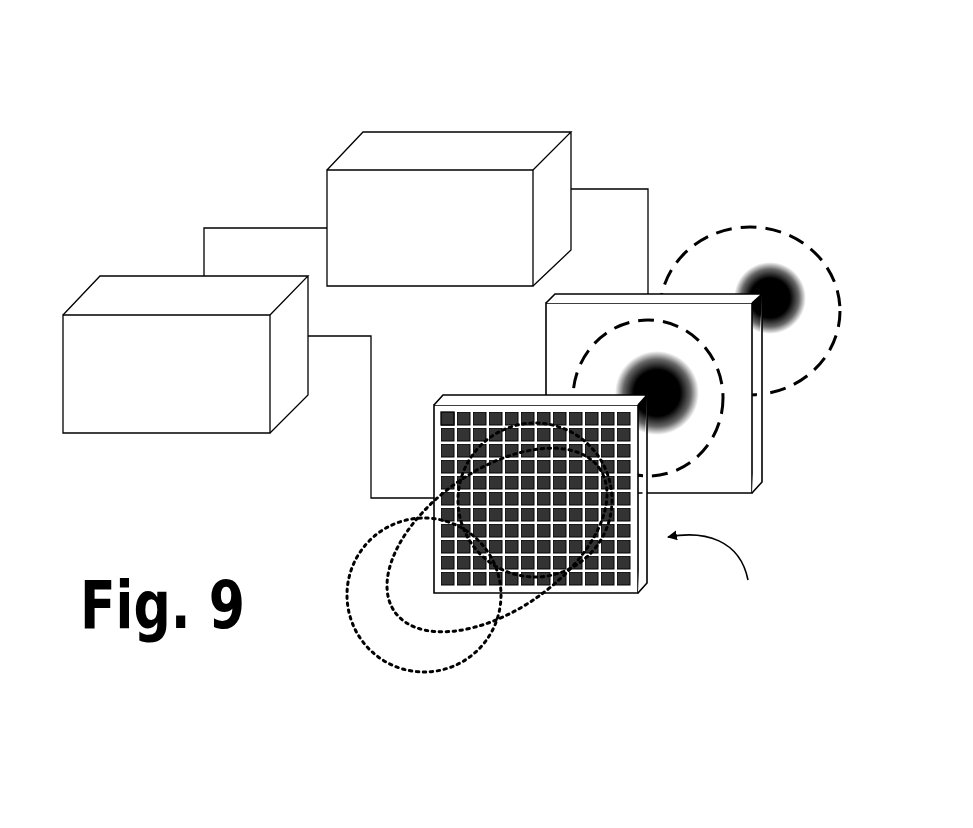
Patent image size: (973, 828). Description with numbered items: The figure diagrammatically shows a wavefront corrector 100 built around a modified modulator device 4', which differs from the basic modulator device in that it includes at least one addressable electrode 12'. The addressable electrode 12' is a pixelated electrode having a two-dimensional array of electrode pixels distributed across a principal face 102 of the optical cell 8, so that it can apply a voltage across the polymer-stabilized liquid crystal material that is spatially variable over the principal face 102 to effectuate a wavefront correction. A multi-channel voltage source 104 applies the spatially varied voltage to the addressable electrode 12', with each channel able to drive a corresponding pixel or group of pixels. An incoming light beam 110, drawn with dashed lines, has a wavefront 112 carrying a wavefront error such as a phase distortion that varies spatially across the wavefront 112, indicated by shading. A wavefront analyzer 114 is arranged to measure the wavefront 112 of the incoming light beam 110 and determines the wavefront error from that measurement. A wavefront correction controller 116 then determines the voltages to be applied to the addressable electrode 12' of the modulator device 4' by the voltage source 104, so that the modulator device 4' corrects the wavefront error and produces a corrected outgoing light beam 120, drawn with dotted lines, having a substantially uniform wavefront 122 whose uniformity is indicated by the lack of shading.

The wavefront corrector 100 is at (62, 113).
The multi-channel voltage source 104 is at (128, 293).
The wavefront correction controller 116 is at (453, 146).
The wavefront analyzer 114 is at (728, 296).
The wavefront 112 is at (800, 296).
The incoming light beam 110 is at (783, 382).
The optical cell 8 is at (643, 567).
The addressable electrode 12' is at (540, 551).
The principal face 102 is at (476, 421).
The corrected outgoing light beam 120 is at (507, 623).
The uniform wavefront 122 is at (395, 608).
The modified modulator device 4' is at (724, 576).